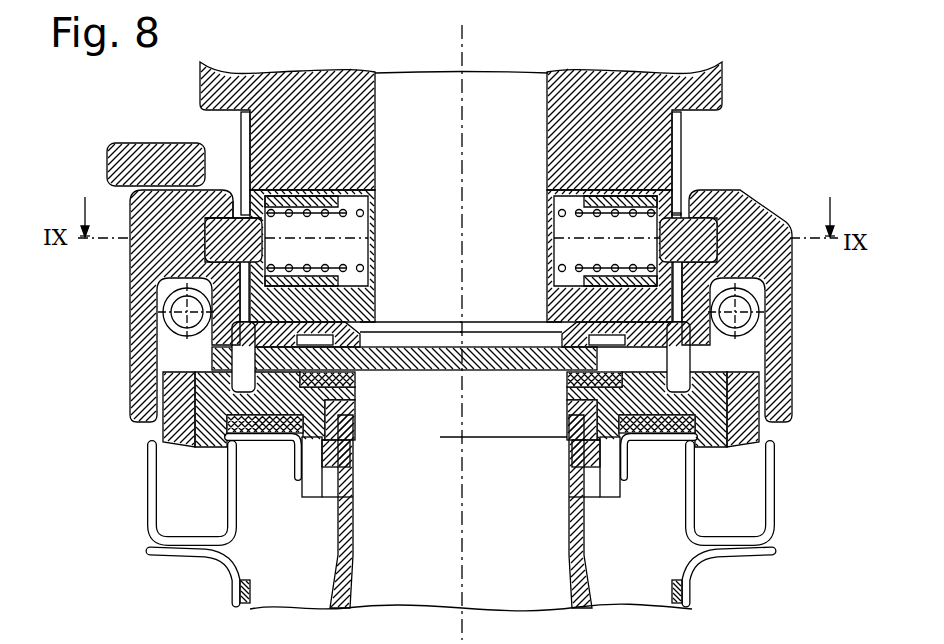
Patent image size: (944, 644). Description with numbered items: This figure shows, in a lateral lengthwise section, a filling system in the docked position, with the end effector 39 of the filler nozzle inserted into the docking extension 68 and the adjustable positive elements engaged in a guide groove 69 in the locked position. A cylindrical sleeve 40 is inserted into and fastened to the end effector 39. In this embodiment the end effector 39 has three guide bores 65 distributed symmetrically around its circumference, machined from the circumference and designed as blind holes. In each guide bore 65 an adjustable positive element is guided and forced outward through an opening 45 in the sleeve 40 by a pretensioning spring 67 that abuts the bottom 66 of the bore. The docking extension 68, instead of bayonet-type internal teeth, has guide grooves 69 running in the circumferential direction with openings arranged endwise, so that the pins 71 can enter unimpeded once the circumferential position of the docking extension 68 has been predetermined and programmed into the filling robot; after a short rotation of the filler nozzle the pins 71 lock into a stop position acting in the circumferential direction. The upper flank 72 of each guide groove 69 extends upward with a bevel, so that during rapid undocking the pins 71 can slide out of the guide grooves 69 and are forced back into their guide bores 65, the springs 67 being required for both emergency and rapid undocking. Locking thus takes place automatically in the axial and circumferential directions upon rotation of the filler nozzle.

The end effector 39 is at (620, 78).
The cylindrical sleeve 40 is at (685, 128).
The opening 45 is at (683, 205).
The guide bore 65 is at (550, 193).
The bottom of the bore 66 is at (563, 262).
The pretensioning spring 67 is at (346, 210).
The docking extension 68 is at (750, 233).
The guide groove 69 is at (225, 256).
The pin 71 is at (222, 216).
The upper flank 72 is at (705, 222).